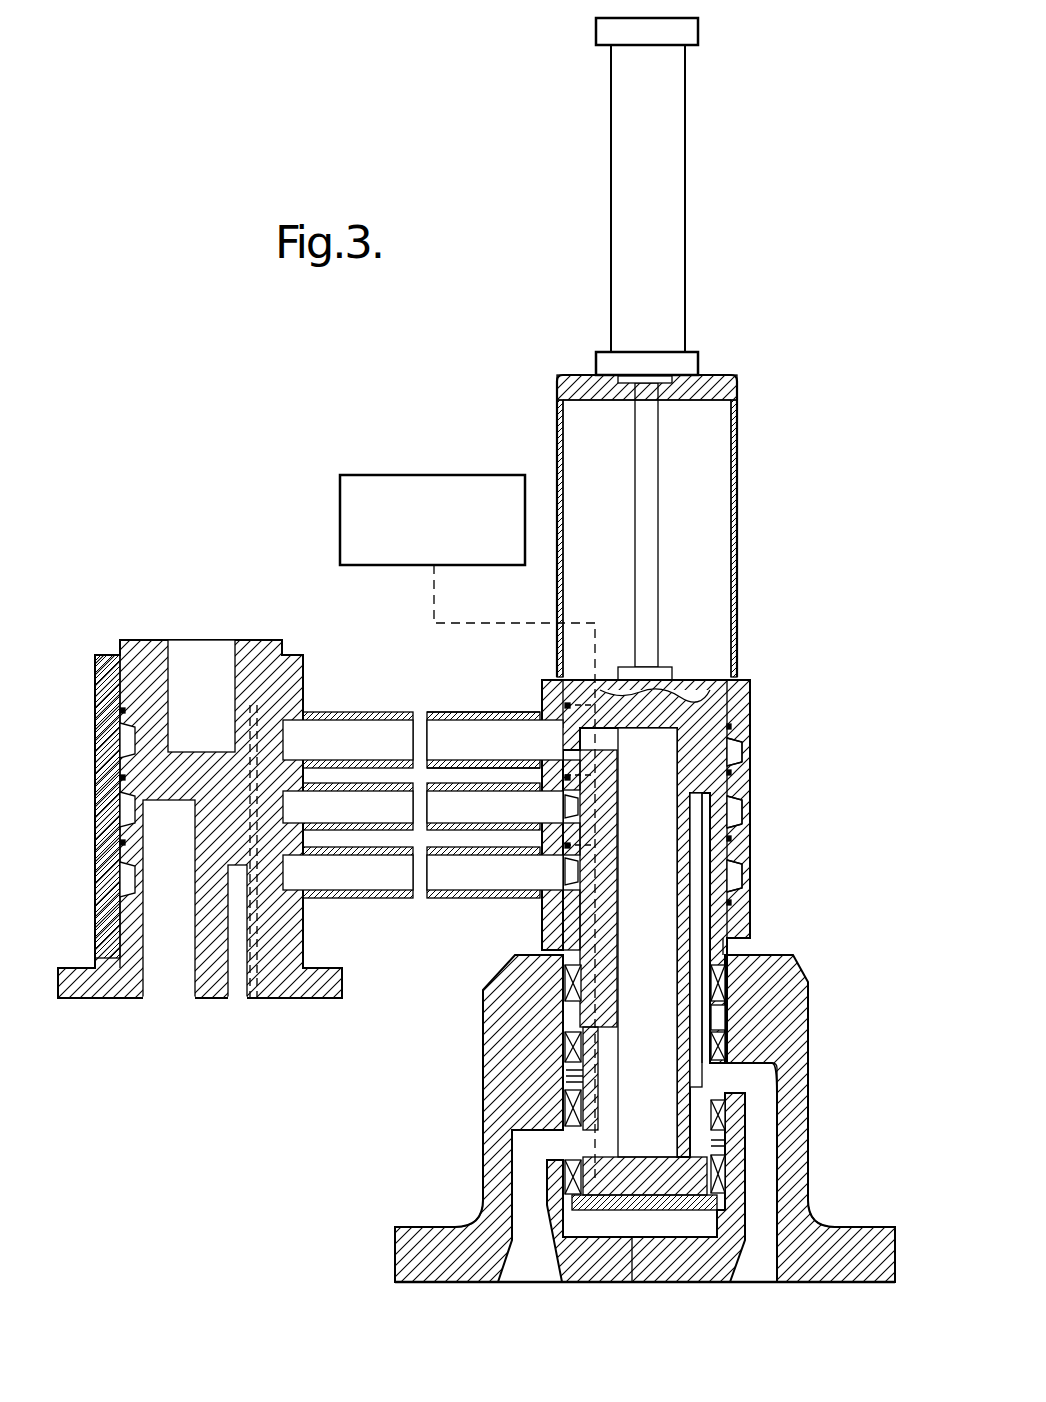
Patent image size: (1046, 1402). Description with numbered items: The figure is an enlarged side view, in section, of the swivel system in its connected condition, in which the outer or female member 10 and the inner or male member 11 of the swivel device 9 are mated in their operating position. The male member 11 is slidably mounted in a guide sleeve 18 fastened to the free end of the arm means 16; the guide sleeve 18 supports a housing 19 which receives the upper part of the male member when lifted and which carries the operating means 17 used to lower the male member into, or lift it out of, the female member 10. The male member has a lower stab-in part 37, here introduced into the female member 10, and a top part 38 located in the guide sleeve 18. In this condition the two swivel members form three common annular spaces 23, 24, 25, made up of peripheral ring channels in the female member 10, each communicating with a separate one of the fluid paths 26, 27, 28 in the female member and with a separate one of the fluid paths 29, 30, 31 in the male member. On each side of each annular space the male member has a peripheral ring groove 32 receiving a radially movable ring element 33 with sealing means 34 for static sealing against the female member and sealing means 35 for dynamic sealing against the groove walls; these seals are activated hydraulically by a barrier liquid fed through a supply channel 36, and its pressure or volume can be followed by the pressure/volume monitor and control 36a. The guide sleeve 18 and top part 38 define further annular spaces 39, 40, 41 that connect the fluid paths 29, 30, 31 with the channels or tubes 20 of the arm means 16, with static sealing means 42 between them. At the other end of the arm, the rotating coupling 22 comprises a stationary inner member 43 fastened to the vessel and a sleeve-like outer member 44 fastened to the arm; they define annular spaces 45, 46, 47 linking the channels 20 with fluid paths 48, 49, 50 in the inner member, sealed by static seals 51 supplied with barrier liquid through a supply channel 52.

The swivel device 9 is at (760, 946).
The outer member (female member) of the swivel device 10 is at (818, 1036).
The inner member (male member) of the swivel device 11 is at (556, 951).
The arm means 16 is at (481, 708).
The operating means 17 is at (672, 232).
The guide sleeve 18 is at (748, 915).
The housing 19 is at (737, 560).
The channels or tubes 20 is at (363, 745).
The rotating coupling 22 is at (312, 658).
The annular space 23 is at (728, 1148).
The annular space 24 is at (728, 1090).
The annular space 25 is at (728, 1012).
The fluid path 26 is at (520, 1265).
The fluid path 27 is at (760, 1265).
The fluid path 28 is at (640, 1265).
The fluid path 29 is at (633, 974).
The fluid path 30 is at (696, 885).
The fluid path 31 is at (603, 880).
The peripheral ring groove 32 is at (712, 1045).
The ring element 33 is at (728, 1055).
The sealing means 34 is at (590, 1040).
The sealing means 35 is at (578, 1062).
The supply channel 36 is at (628, 1094).
The pressure/volume monitor and control 36a is at (470, 477).
The lower stab-in part 37 is at (690, 1135).
The top part 38 is at (742, 768).
The annular space 39 is at (742, 742).
The annular space 40 is at (740, 804).
The annular space 41 is at (740, 880).
The static sealing means 42 is at (740, 842).
The stationary inner member 43 is at (150, 778).
The outer member 44 is at (105, 715).
The annular space 45 is at (125, 748).
The annular space 46 is at (125, 812).
The annular space 47 is at (125, 882).
The fluid path 48 is at (203, 655).
The fluid path 49 is at (175, 982).
The fluid path 50 is at (237, 982).
The static seals 51 is at (125, 850).
The supply channel 52 is at (282, 980).